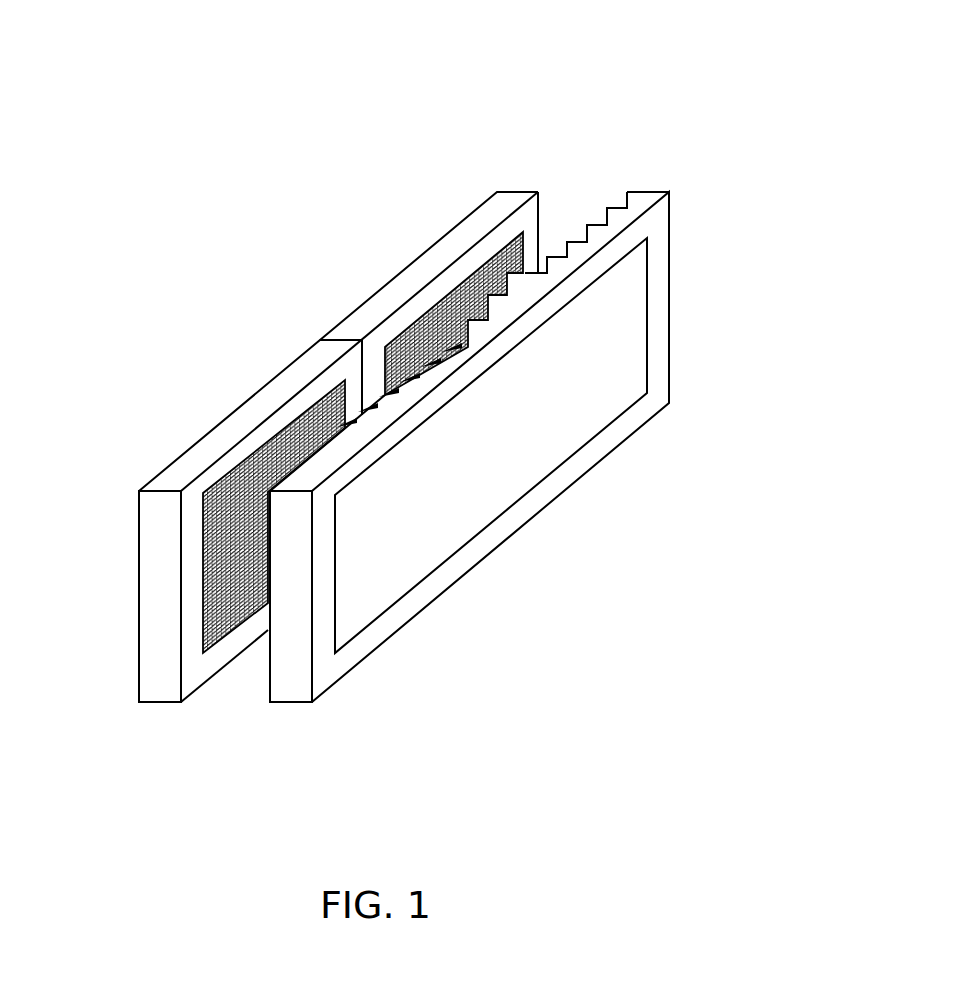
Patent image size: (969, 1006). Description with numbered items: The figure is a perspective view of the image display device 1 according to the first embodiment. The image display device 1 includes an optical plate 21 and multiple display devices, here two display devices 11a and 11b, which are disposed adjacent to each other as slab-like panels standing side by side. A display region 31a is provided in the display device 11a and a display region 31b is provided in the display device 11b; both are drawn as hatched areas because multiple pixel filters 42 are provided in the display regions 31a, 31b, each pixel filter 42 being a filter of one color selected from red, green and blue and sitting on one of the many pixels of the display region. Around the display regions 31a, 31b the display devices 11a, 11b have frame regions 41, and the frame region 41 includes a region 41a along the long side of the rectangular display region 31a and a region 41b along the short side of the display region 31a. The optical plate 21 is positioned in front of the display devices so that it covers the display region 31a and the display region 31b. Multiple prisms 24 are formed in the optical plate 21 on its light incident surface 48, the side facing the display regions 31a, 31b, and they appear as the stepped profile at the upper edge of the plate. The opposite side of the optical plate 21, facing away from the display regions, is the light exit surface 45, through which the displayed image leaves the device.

The image display device 1 is at (628, 77).
The display device 11a is at (408, 270).
The display device 11b is at (240, 404).
The optical plate 21 is at (312, 706).
The prism 24 is at (613, 212).
The display region 31a is at (528, 247).
The display region 31b is at (203, 531).
The frame region 41 is at (245, 782).
The region 41a is at (217, 660).
The region 41b is at (193, 623).
The pixel filter 42 is at (227, 477).
The light exit surface 45 is at (373, 637).
The light incident surface 48 is at (594, 222).